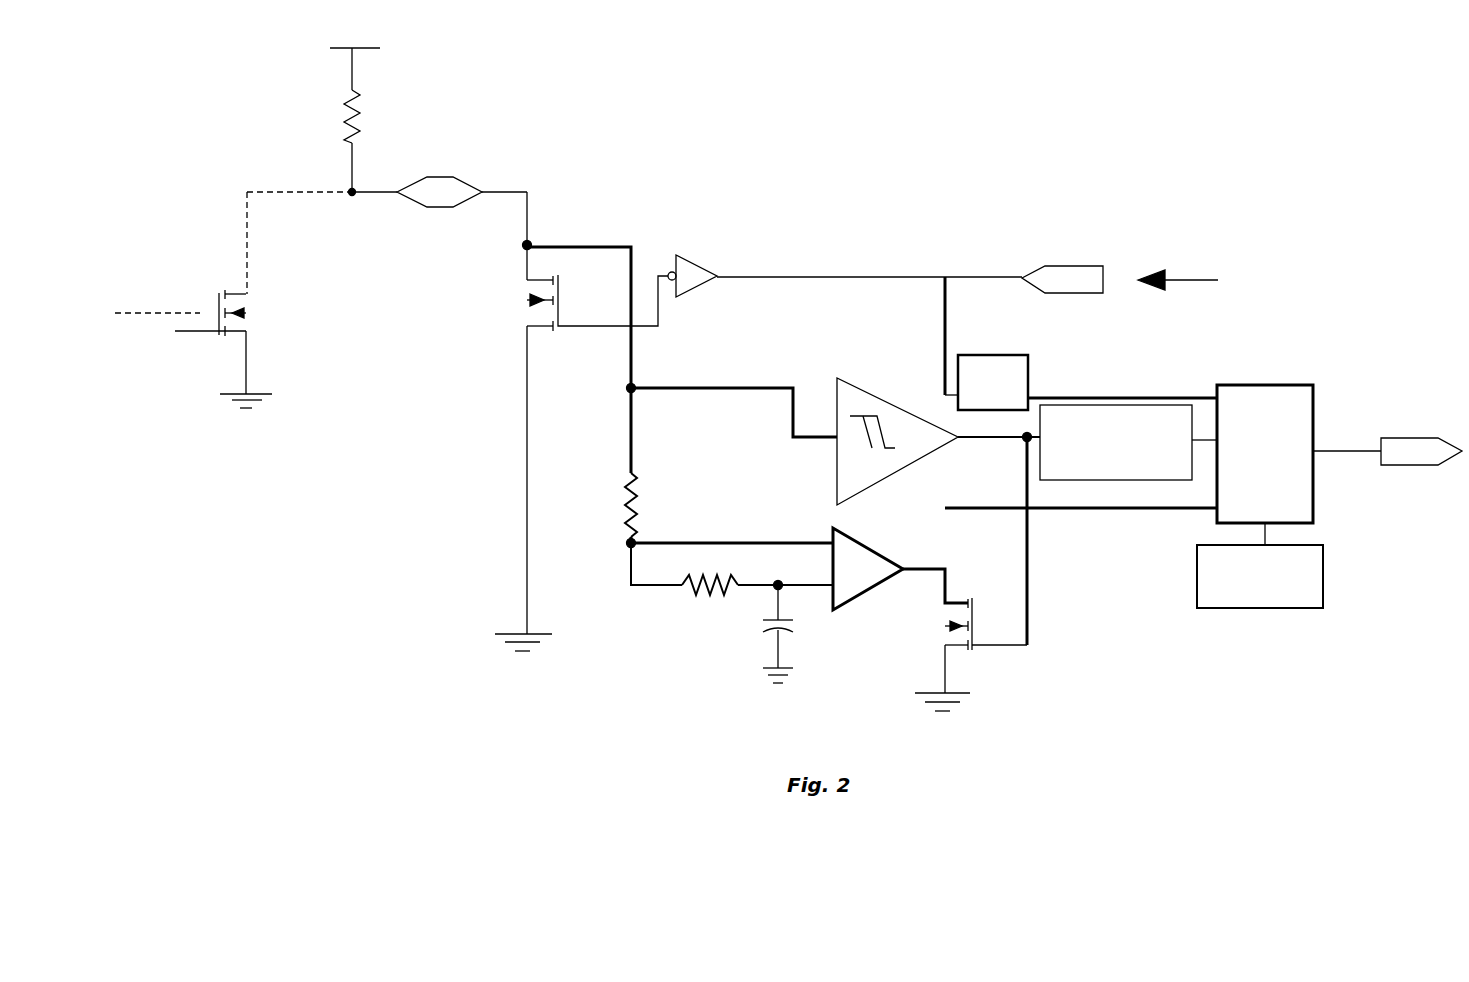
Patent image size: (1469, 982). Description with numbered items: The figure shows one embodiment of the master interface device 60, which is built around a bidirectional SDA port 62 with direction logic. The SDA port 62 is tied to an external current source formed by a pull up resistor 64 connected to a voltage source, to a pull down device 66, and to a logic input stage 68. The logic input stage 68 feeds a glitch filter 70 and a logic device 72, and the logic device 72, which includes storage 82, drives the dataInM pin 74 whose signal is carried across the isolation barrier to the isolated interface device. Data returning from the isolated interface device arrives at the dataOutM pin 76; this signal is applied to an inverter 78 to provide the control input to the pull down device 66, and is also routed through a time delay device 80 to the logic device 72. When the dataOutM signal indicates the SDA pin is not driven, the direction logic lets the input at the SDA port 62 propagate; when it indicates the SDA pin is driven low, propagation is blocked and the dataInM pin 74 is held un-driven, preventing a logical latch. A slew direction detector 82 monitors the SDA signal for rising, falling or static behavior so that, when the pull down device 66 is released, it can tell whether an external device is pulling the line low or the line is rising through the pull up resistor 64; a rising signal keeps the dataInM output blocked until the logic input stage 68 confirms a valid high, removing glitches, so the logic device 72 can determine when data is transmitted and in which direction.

The master interface device 60 is at (737, 108).
The SDA port 62 is at (443, 157).
The pull up resistor 64 is at (297, 108).
The pull down device 66 is at (495, 298).
The logic input stage 68 is at (863, 385).
The glitch filter 70 is at (1170, 386).
The logic device 72 is at (1313, 513).
The dataInM pin 74 is at (1418, 394).
The dataOutM pin 76 is at (1112, 238).
The inverter 78 is at (712, 254).
The time delay device 80 is at (1009, 356).
The slew direction detector 82 is at (868, 550).